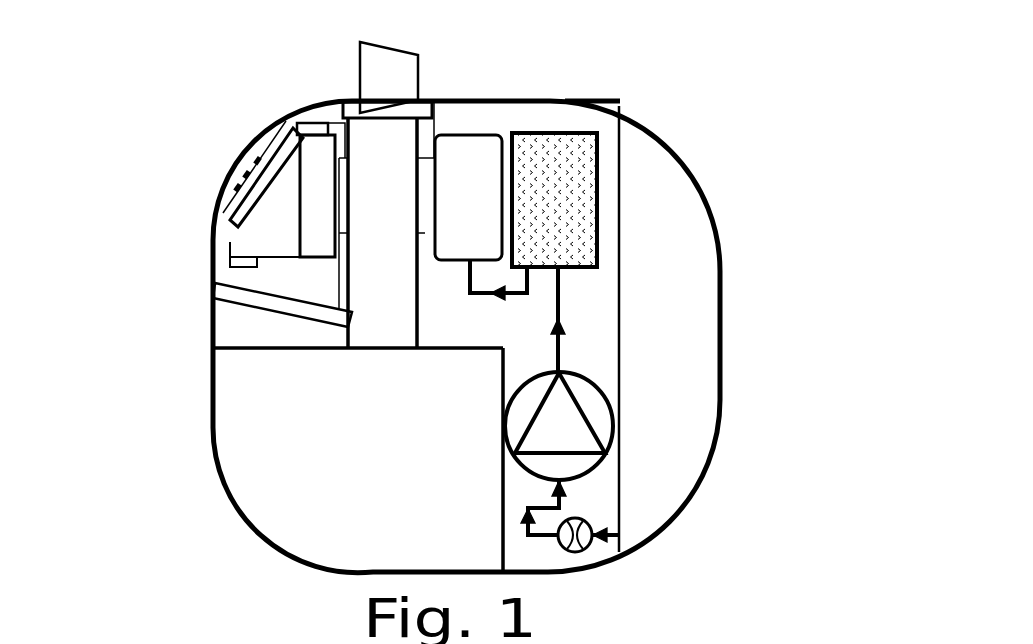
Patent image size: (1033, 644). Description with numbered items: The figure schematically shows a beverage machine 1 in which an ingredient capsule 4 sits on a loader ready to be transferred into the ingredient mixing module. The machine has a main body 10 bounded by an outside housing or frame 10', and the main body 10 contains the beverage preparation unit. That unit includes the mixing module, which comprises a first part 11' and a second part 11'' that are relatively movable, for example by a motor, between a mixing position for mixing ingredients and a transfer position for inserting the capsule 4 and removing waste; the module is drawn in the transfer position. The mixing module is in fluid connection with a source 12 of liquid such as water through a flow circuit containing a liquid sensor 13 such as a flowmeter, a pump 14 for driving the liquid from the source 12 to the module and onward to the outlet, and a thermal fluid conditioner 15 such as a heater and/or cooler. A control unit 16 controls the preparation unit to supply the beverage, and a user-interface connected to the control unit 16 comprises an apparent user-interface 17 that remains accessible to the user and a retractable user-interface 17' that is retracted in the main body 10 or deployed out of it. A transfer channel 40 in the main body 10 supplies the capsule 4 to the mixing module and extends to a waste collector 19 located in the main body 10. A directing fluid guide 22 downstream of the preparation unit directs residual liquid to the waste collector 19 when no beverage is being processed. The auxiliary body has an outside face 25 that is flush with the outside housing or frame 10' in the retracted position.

The beverage machine 1 is at (108, 96).
The ingredient capsule 4 is at (388, 58).
The main body 10 is at (702, 329).
The outside housing or frame 10' is at (613, 71).
The first part 11' is at (239, 201).
The second part 11'' is at (481, 165).
The source of liquid 12 is at (680, 420).
The liquid sensor 13 is at (582, 548).
The pump 14 is at (593, 403).
The thermal fluid conditioner 15 is at (570, 165).
The control unit 16 is at (245, 200).
The apparent user-interface 17 is at (261, 166).
The retractable user-interface 17' is at (278, 94).
The waste collector 19 is at (265, 443).
The directing fluid guide 22 is at (252, 298).
The outside face 25 is at (232, 187).
The transfer channel 40 is at (397, 307).